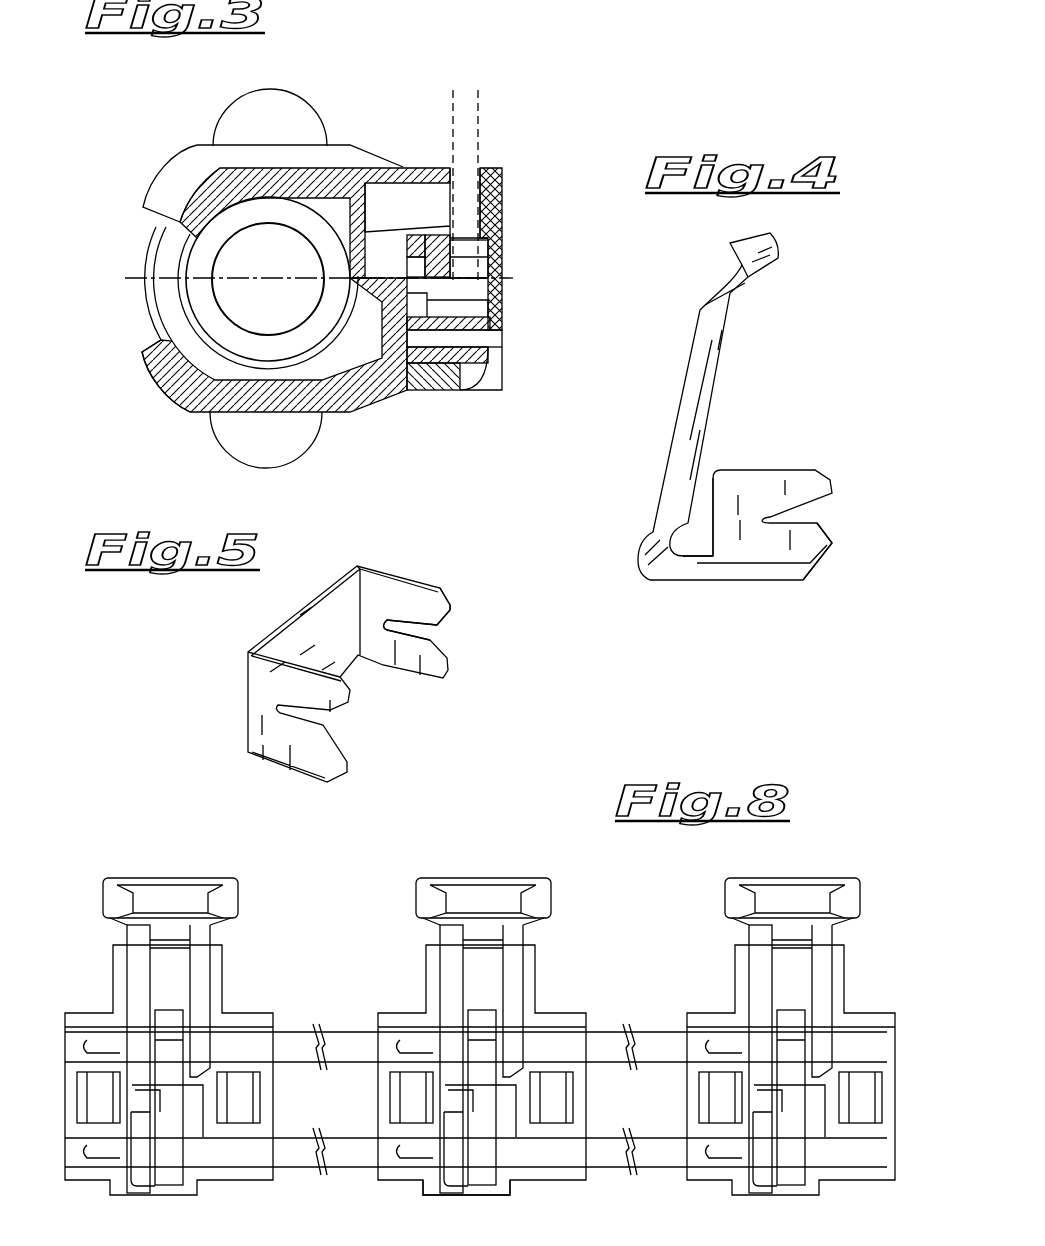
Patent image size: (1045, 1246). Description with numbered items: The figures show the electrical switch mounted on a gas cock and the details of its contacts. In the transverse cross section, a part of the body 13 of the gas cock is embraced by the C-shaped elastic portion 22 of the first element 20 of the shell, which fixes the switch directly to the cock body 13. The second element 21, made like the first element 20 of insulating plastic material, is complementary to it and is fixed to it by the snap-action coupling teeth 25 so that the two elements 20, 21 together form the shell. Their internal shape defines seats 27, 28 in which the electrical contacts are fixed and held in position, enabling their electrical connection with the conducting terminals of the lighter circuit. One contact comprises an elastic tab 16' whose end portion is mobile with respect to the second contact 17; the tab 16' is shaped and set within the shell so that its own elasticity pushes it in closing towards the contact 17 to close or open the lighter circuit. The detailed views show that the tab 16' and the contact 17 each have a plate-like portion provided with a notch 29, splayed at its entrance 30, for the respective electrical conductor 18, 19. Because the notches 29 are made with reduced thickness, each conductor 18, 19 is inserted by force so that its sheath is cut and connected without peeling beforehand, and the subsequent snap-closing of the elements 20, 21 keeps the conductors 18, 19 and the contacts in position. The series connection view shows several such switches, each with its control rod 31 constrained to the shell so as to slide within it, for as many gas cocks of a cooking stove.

In FIG. 3, the body 13 is at (162, 262).
In FIG. 4, the elastic tab 16' is at (735, 406).
In FIG. 8, the elastic tab 16' is at (436, 1117).
In FIG. 3, the second contact 17 is at (486, 223).
In FIG. 5, the second contact 17 is at (297, 620).
In FIG. 8, the electrical conductor 18 is at (352, 1042).
In FIG. 3, the electrical conductor 19 is at (484, 126).
In FIG. 8, the electrical conductor 19 is at (290, 1163).
In FIG. 3, the first element 20 is at (373, 400).
In FIG. 3, the second element 21 is at (498, 298).
In FIG. 3, the C-shaped elastic portion 22 is at (152, 382).
In FIG. 3, the snap-action coupling teeth 25 is at (493, 368).
In FIG. 8, the seat 27 is at (550, 1167).
In FIG. 3, the seat 28 is at (450, 168).
In FIG. 8, the seat 28 is at (560, 1033).
In FIG. 4, the notch 29 is at (765, 517).
In FIG. 5, the notch 29 is at (407, 640).
In FIG. 4, the entrance 30 is at (833, 542).
In FIG. 5, the entrance 30 is at (448, 620).
In FIG. 8, the control rod 31 is at (573, 860).